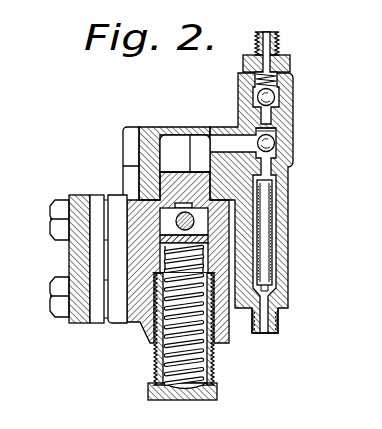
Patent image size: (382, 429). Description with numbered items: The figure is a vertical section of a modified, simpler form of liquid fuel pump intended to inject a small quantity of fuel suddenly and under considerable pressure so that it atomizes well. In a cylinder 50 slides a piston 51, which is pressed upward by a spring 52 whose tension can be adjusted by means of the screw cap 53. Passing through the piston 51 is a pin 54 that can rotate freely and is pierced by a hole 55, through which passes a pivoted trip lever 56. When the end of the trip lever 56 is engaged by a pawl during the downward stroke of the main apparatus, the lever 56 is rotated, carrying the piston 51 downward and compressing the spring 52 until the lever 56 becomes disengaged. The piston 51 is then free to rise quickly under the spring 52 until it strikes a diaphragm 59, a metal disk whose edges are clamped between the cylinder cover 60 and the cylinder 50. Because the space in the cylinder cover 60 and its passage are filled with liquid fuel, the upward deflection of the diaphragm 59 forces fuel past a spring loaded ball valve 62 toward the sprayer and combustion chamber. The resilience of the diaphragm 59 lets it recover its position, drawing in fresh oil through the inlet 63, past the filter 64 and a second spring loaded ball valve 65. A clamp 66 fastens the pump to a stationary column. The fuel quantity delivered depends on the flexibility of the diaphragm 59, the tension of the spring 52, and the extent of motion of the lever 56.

The cylinder 50 is at (150, 226).
The piston 51 is at (153, 127).
The spring 52 is at (158, 365).
The screw cap 53 is at (210, 372).
The pin 54 is at (162, 240).
The hole 55 is at (163, 225).
The trip lever 56 is at (194, 217).
The diaphragm 59 is at (190, 135).
The cylinder cover 60 is at (166, 127).
The spring loaded ball valve 62 is at (295, 96).
The inlet 63 is at (264, 333).
The filter 64 is at (288, 255).
The spring loaded ball valve 65 is at (294, 143).
The clamp 66 is at (54, 246).